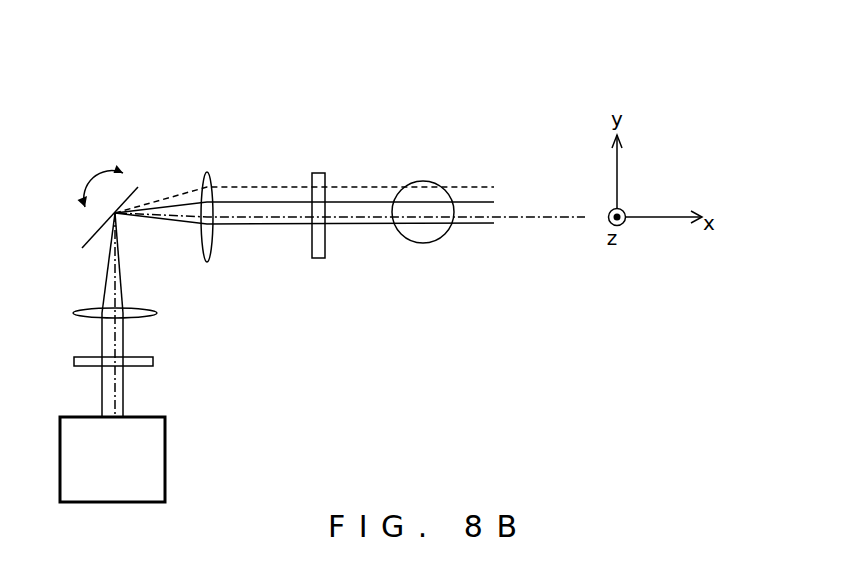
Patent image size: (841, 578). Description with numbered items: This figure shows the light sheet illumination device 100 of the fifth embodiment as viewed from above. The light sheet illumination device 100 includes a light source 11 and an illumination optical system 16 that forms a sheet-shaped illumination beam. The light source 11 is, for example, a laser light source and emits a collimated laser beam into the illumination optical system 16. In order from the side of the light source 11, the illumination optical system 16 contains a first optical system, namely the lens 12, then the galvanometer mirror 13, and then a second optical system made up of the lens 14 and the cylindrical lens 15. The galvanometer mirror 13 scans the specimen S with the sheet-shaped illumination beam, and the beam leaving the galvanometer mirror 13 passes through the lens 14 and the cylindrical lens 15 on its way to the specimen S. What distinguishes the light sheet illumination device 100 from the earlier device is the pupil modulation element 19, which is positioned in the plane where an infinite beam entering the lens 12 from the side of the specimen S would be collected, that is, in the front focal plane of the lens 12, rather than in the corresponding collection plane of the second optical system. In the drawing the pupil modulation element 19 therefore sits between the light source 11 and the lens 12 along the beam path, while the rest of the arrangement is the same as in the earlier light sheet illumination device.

The light sheet illumination device 100 is at (637, 61).
The light source 11 is at (165, 452).
The lens 12 is at (157, 316).
The galvanometer mirror 13 is at (94, 235).
The lens 14 is at (207, 262).
The cylindrical lens 15 is at (317, 258).
The illumination optical system 16 is at (350, 343).
The pupil modulation element 19 is at (88, 366).
The specimen S is at (455, 207).